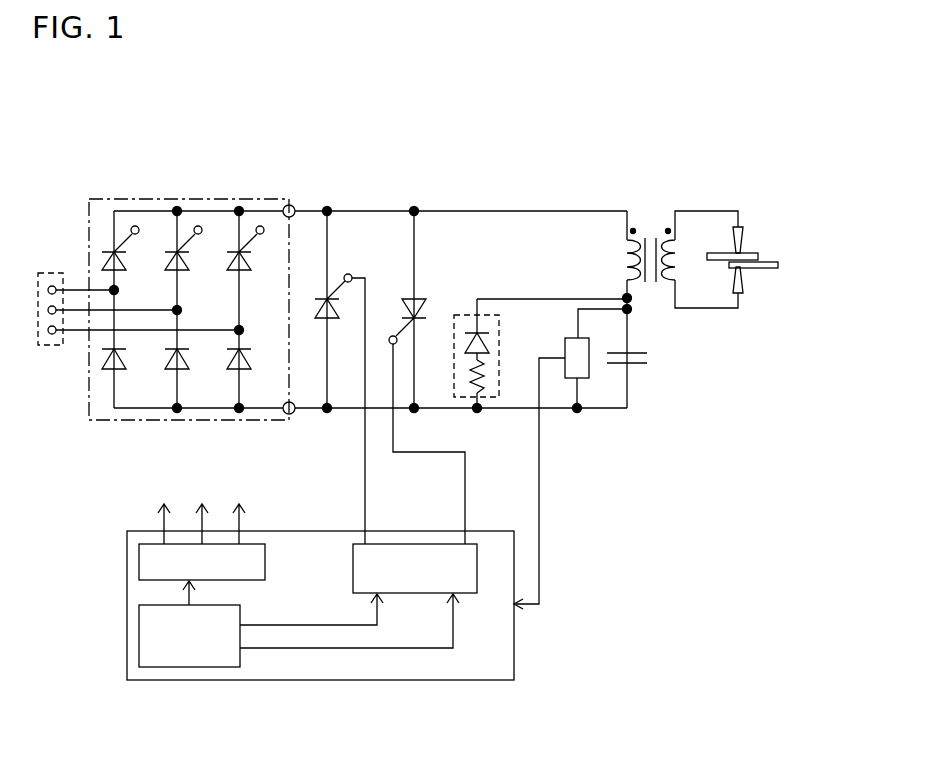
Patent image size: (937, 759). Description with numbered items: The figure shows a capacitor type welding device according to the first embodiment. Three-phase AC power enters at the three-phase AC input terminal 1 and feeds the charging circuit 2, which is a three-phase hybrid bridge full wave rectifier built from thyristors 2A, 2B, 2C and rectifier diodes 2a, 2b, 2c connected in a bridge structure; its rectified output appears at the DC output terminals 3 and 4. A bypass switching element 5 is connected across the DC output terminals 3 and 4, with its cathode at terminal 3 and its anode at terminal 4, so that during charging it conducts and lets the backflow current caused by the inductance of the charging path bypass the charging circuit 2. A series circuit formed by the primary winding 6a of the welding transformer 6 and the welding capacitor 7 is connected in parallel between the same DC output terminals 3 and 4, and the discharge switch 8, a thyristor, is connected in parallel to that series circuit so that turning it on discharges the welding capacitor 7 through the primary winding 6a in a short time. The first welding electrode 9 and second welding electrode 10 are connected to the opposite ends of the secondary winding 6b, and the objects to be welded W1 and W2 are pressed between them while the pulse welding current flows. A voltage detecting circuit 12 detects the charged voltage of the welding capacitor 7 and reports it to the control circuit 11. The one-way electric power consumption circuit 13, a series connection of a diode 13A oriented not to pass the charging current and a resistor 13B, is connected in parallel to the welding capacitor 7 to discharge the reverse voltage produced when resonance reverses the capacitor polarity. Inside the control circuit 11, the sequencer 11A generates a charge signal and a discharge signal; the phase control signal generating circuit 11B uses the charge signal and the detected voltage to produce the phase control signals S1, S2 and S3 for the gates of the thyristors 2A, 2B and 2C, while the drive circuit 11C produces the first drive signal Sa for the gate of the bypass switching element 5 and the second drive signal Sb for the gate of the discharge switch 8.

The three-phase AC input terminal 1 is at (52, 272).
The charging circuit 2 is at (126, 199).
The thyristor 2A is at (104, 248).
The thyristor 2B is at (167, 248).
The thyristor 2C is at (228, 248).
The rectifier diode 2a is at (106, 372).
The rectifier diode 2b is at (168, 372).
The rectifier diode 2c is at (229, 372).
The DC output terminal 3 is at (292, 206).
The DC output terminal 4 is at (292, 414).
The bypass switching element 5 is at (331, 318).
The welding transformer 6 is at (668, 287).
The primary winding 6a is at (627, 244).
The secondary winding 6b is at (676, 244).
The welding capacitor 7 is at (636, 365).
The discharge switch 8 is at (406, 303).
The first welding electrode 9 is at (745, 232).
The second welding electrode 10 is at (745, 290).
The object to be welded W1 is at (758, 256).
The object to be welded W2 is at (772, 268).
The control circuit 11 is at (290, 612).
The sequencer 11A is at (139, 640).
The phase control signal generating circuit 11B is at (165, 530).
The drive circuit 11C is at (415, 555).
The voltage detecting circuit 12 is at (565, 350).
The one-way electric power consumption circuit 13 is at (540, 359).
The diode 13A is at (483, 330).
The resistor 13B is at (484, 400).
The first drive signal Sa is at (373, 411).
The second drive signal Sb is at (444, 444).
The phase control signal S1 is at (164, 512).
The phase control signal S2 is at (202, 512).
The phase control signal S3 is at (239, 512).